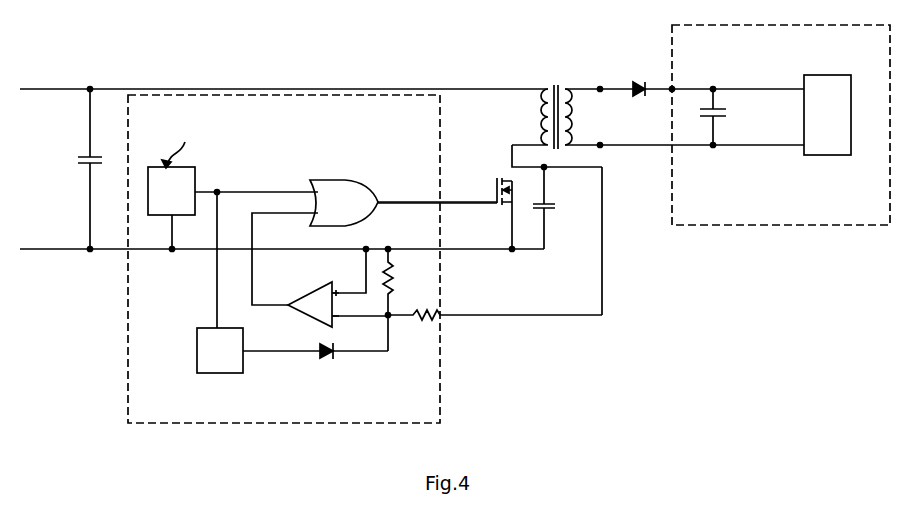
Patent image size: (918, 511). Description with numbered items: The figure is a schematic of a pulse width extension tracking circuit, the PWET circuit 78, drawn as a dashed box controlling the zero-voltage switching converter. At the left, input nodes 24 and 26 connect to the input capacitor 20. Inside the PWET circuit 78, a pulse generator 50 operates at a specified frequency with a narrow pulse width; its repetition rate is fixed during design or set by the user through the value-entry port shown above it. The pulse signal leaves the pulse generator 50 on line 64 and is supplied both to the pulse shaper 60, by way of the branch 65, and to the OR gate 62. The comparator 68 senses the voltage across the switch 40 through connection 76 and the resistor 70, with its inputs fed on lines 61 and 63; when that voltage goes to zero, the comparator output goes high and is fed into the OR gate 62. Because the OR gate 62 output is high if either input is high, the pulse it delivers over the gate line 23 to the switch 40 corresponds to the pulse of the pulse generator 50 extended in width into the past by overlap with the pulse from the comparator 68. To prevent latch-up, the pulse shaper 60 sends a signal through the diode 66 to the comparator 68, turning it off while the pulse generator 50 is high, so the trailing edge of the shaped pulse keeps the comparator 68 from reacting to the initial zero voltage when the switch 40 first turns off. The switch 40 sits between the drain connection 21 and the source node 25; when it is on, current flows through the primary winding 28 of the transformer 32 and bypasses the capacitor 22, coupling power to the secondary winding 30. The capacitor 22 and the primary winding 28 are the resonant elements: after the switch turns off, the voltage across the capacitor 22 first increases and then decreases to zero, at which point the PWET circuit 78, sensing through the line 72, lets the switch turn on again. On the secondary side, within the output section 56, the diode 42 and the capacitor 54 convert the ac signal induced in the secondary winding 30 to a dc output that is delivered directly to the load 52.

The input capacitor 20 is at (80, 162).
The input node 24 is at (90, 89).
The input node 26 is at (90, 249).
The pulse generator 50 is at (203, 186).
The connection line 64 is at (217, 192).
The connection line 65 is at (250, 295).
The OR gate 62 is at (340, 200).
The comparator 68 is at (318, 303).
The amplifier input line 61 is at (365, 288).
The node connection 76 is at (366, 249).
The resistor 70 is at (391, 268).
The amplifier output line 63 is at (388, 318).
The connecting line 72 is at (428, 320).
The pulse shaper 60 is at (292, 350).
The diode 66 is at (327, 360).
The switch 40 is at (493, 190).
The gate line 23 is at (487, 203).
The drain line 21 is at (511, 168).
The source node 25 is at (512, 250).
The capacitor 22 is at (557, 205).
The primary winding 28 is at (546, 110).
The transformer 32 is at (556, 85).
The secondary winding 30 is at (565, 108).
The diode 42 is at (636, 85).
The output circuit 56 is at (766, 225).
The capacitor 54 is at (727, 113).
The load 52 is at (827, 115).
The PWET circuit 78 is at (440, 378).